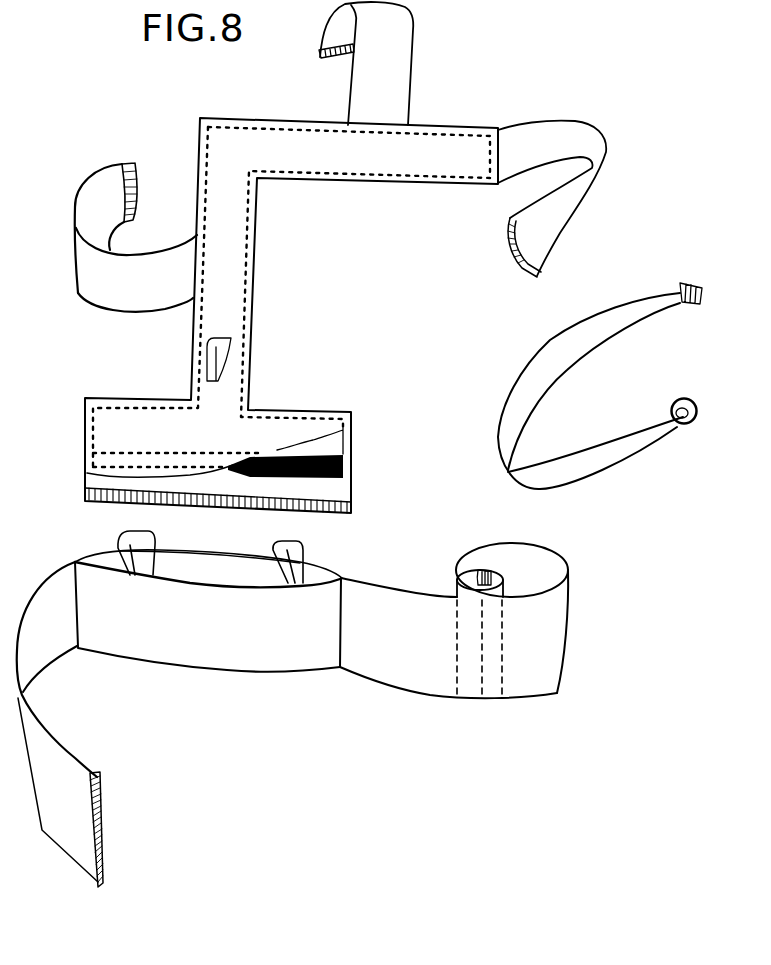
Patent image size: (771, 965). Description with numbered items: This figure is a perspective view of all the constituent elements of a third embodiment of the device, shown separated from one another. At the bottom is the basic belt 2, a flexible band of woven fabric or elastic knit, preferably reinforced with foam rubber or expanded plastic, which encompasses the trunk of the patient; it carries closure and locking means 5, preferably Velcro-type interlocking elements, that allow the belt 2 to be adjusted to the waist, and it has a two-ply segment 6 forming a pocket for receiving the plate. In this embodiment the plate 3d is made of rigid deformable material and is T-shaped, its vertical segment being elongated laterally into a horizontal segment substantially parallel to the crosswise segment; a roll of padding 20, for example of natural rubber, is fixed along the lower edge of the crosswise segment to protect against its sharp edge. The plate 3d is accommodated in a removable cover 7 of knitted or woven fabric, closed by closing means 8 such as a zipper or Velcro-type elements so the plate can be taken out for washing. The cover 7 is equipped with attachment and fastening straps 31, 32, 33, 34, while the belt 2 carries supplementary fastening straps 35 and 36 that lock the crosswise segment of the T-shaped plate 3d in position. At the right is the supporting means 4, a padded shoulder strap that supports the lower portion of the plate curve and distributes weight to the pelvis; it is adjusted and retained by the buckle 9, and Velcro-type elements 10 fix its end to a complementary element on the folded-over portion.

The basic belt 2 is at (232, 675).
The plate 3d is at (345, 449).
The means for supporting the base of the deformable portion of the plate 4 is at (528, 392).
The closure and locking means 5 is at (320, 57).
The 2-ply segment 6 is at (190, 567).
The removable cover 7 is at (230, 283).
The closing means 8 is at (327, 513).
The buckle 9 is at (680, 398).
The Velcro-type elements 10 is at (687, 284).
The roll of padding 20 is at (346, 470).
The attachment and fastening strap 31 is at (413, 50).
The attachment and fastening strap 32 is at (565, 120).
The attachment and fastening strap 33 is at (97, 288).
The attachment and fastening strap 34 is at (212, 358).
The supplementary fastening strap 35 is at (118, 533).
The supplementary fastening strap 36 is at (303, 543).